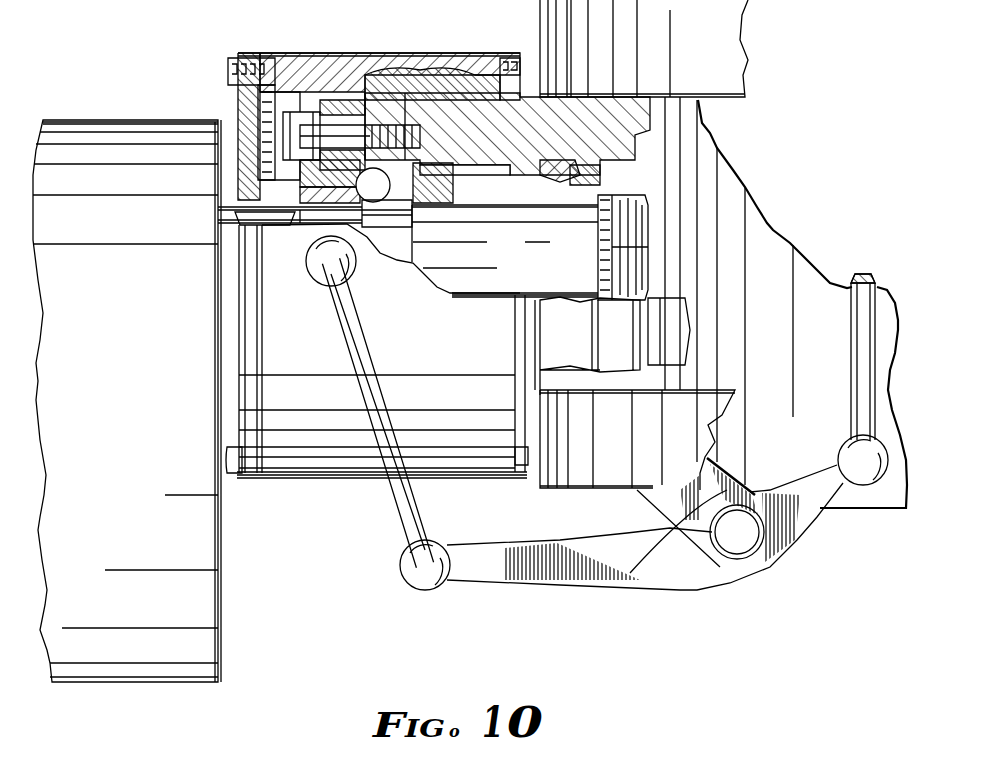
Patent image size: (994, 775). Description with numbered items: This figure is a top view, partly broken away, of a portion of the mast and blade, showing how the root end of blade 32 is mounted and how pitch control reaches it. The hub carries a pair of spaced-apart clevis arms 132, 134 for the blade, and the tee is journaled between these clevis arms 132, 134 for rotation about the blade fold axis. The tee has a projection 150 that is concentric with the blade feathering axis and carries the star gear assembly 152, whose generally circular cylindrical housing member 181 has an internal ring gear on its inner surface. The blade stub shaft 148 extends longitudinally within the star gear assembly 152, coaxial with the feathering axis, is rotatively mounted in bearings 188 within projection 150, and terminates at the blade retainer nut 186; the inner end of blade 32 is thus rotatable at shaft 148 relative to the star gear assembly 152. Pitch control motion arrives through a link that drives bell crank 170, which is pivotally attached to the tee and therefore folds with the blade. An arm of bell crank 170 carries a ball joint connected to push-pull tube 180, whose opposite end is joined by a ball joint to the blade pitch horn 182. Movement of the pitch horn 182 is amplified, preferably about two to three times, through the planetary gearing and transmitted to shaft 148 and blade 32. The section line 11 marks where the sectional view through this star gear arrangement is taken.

The section line 11- 11 is at (357, 30).
The blade 32 is at (80, 323).
The clevis arm 132 is at (630, 454).
The clevis arm 134 is at (628, 42).
The blade stub shaft 148 is at (522, 260).
The projection of tee 150 is at (510, 150).
The star gear assembly 152 is at (431, 50).
The bell crank 170 is at (676, 582).
The push-pull tube 180 is at (405, 515).
The housing member 181 is at (413, 58).
The blade pitch horn 182 is at (258, 100).
The blade retainer nut 186 is at (643, 203).
The bearings 188 is at (566, 180).